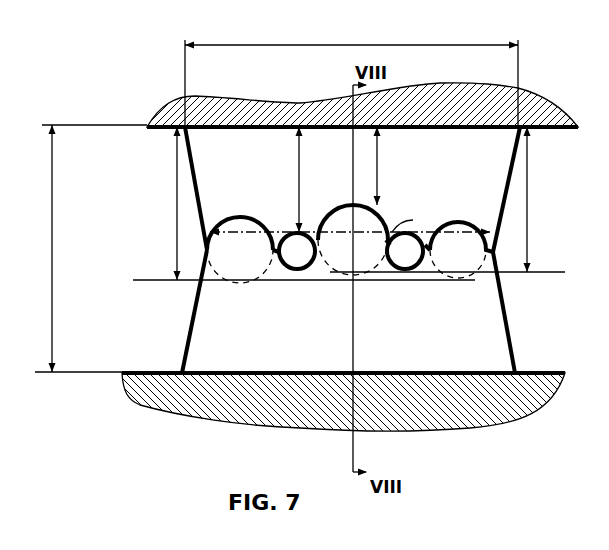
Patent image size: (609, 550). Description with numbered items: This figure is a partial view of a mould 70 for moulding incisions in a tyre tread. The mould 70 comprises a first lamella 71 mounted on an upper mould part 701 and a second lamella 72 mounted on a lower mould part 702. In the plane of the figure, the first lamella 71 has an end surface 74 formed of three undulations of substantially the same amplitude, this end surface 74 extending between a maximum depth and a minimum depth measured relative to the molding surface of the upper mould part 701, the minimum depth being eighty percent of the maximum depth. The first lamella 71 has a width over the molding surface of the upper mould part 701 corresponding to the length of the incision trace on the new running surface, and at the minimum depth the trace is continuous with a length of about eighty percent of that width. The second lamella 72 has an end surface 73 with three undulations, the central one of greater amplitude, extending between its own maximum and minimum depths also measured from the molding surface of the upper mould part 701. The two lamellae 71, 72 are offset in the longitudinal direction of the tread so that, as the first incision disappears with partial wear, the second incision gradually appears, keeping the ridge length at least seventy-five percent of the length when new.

The mould 70 is at (549, 70).
The upper mould part 701 is at (258, 108).
The lower mould part 702 is at (137, 372).
The first lamella 71 is at (208, 192).
The second lamella 72 is at (203, 310).
The end surface 73 is at (448, 228).
The end surface 74 is at (290, 237).